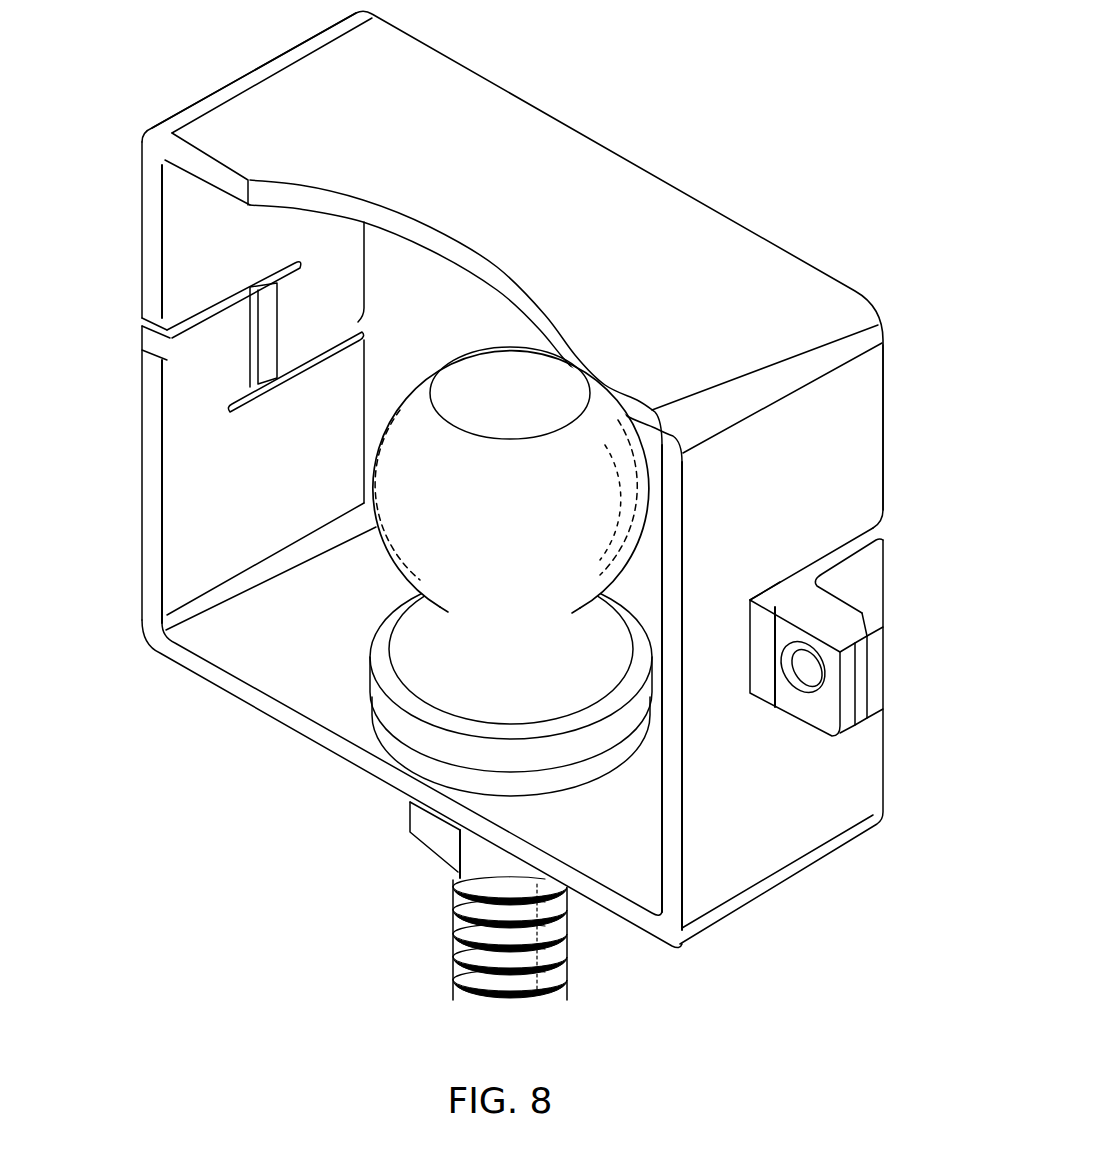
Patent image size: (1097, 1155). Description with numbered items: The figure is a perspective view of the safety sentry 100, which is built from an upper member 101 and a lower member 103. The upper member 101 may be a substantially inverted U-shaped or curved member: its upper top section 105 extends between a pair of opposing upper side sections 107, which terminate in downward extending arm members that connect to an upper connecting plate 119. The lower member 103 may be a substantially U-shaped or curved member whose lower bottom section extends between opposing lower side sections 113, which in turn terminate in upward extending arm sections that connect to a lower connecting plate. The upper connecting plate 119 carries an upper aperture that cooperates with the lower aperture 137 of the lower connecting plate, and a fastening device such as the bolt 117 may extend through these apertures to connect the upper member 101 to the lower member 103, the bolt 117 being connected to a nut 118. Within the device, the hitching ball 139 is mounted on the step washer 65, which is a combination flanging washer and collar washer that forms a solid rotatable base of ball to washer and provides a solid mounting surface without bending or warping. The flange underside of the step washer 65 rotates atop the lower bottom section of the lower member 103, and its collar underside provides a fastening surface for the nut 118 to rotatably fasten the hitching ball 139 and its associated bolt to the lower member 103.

The safety sentry 100 is at (803, 132).
The upper member 101 is at (258, 70).
The lower member 103 is at (776, 886).
The upper top section 105 is at (618, 160).
The upper side sections 107 is at (148, 234).
The lower side section 113 is at (148, 487).
The bolt 117 is at (455, 987).
The nut 118 is at (440, 850).
The upper connecting plate 119 is at (812, 712).
The lower aperture 137 is at (873, 670).
The hitching ball 139 is at (387, 568).
The step washer 65 is at (572, 778).